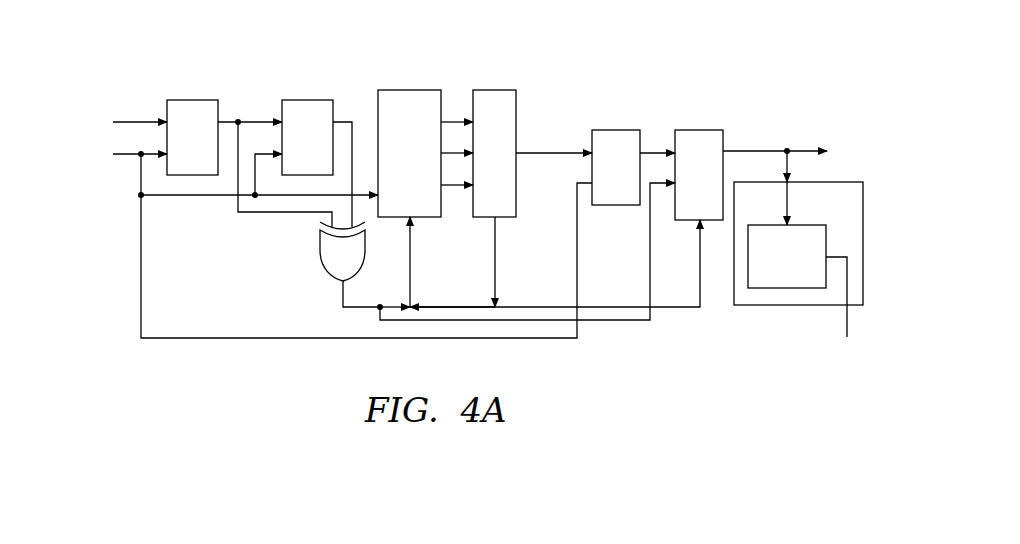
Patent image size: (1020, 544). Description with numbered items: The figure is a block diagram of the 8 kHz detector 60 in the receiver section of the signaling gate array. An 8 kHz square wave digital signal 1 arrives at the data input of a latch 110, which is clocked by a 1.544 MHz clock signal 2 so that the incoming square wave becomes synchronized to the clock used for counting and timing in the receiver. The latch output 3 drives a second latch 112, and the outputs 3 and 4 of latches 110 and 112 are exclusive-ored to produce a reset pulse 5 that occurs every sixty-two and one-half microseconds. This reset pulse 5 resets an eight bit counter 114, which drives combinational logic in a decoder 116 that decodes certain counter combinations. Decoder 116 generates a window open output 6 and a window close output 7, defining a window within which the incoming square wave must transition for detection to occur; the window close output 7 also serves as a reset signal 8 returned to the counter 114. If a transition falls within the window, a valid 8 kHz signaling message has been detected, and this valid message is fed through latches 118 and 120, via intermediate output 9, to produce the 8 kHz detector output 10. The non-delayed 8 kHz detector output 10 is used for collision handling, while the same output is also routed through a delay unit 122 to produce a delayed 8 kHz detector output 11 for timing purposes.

The 8KHz input signal 1 is at (117, 116).
The 1.544MHz clock signal 2 is at (310, 234).
The first flip-flop output signal 3 is at (275, 165).
The second flip-flop output signal 4 is at (342, 165).
The exclusive-OR output signal 5 is at (365, 266).
The window open signal 6 is at (554, 139).
The window close signal 7 is at (555, 262).
The counter reset signal 8 is at (527, 251).
The third flip-flop output signal 9 is at (657, 141).
The 8KHz detector output signal 10 is at (825, 176).
The delayed 8KHz detector output signal 11 is at (859, 334).
The 8 kHz detector 60 is at (796, 104).
The latch 110 is at (193, 100).
The latch 112 is at (305, 100).
The 8 bit counter 114 is at (410, 90).
The decoder 116 is at (497, 90).
The latch 118 is at (615, 130).
The latch 120 is at (700, 130).
The delay unit 122 is at (788, 291).